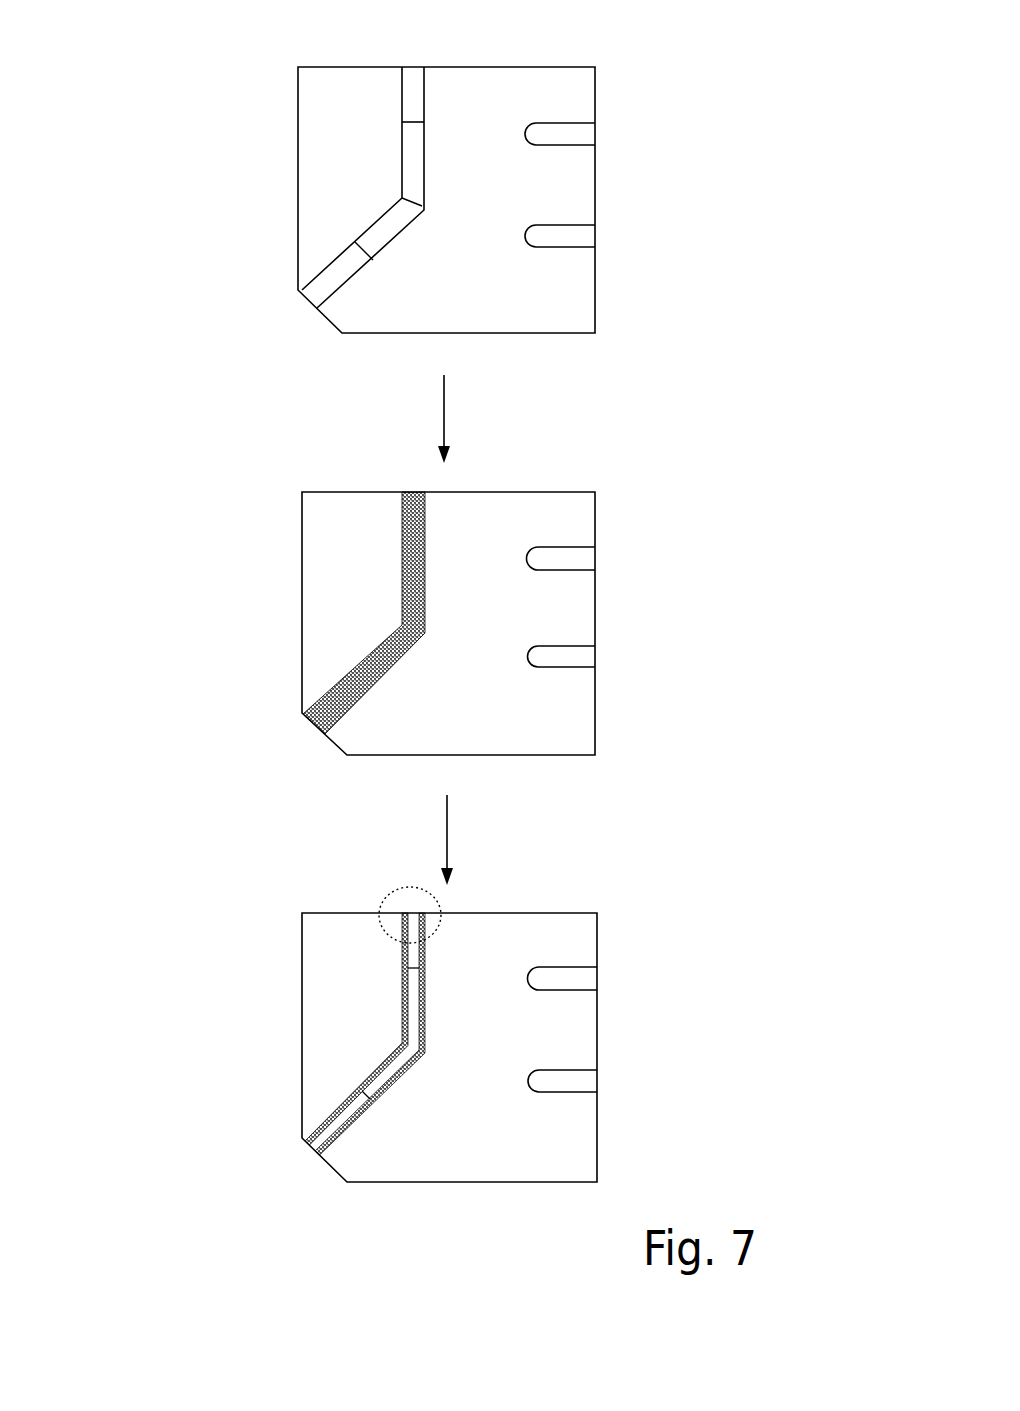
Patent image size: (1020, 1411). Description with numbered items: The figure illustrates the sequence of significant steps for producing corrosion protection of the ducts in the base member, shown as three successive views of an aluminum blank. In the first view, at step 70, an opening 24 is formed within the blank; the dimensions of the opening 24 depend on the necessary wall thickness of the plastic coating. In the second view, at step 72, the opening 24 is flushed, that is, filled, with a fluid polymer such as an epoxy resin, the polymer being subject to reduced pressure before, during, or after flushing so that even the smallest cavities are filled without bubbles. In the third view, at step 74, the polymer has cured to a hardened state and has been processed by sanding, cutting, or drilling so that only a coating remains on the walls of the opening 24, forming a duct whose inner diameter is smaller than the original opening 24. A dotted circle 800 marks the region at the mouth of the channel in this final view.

The opening 24 is at (323, 278).
The step of forming the opening 70 is at (458, 166).
The step of flushing the opening with polymer 72 is at (455, 593).
The step of processing the cured polymer 74 is at (440, 978).
The detail region of channel opening 800 is at (385, 898).